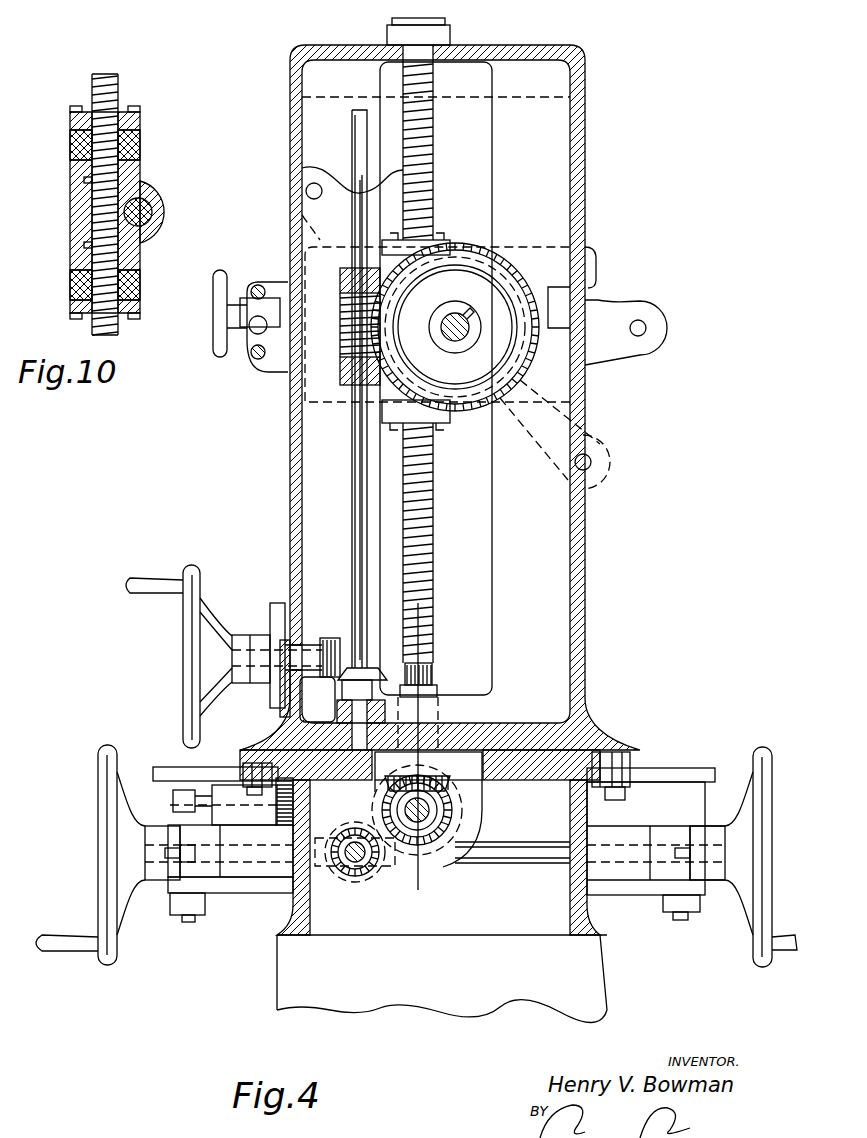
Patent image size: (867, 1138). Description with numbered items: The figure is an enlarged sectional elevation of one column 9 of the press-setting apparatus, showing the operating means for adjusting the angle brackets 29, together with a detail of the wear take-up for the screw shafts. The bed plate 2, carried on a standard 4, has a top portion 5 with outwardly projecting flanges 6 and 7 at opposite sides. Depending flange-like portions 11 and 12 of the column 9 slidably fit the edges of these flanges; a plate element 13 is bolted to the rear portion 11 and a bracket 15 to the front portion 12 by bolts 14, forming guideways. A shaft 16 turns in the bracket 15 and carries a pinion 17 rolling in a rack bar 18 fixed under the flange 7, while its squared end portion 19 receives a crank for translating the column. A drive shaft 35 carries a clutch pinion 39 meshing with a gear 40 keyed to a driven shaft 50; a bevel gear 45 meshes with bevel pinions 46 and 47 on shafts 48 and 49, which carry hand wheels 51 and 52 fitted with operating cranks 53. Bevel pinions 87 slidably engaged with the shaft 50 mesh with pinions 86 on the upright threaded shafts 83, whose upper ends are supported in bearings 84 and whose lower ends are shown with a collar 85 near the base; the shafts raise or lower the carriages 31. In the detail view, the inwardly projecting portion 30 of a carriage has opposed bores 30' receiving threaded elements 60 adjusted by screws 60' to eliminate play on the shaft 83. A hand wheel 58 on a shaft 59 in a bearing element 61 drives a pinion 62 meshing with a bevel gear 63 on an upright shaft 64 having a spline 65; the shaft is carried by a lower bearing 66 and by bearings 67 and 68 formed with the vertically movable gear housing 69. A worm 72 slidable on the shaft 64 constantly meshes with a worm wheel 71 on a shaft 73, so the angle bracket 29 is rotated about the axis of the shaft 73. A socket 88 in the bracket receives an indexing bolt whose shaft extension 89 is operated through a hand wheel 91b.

In FIG. 4, the bed plate 2 is at (568, 918).
In FIG. 4, the standard 4 is at (283, 997).
In FIG. 4, the top portion 5 is at (505, 758).
In FIG. 4, the flange 6 is at (628, 764).
In FIG. 4, the flange 7 is at (418, 603).
In FIG. 4, the column 9 is at (590, 557).
In FIG. 4, the rear flange-like portion 11 is at (630, 763).
In FIG. 4, the front flange-like portion 12 is at (242, 767).
In FIG. 4, the plate element 13 is at (628, 785).
In FIG. 4, the bolt 14 is at (255, 790).
In FIG. 4, the bracket 15 is at (232, 770).
In FIG. 4, the shaft 16 is at (227, 812).
In FIG. 4, the pinion 17 is at (287, 822).
In FIG. 4, the rack bar 18 is at (300, 772).
In FIG. 4, the projecting end portion 19 is at (183, 798).
In FIG. 4, the angle bracket 29 is at (668, 340).
In FIG. 10, the inwardly projecting portion 30 is at (142, 202).
In FIG. 4, the inwardly projecting portion 30 is at (455, 294).
In FIG. 10, the bore 30' is at (57, 221).
In FIG. 4, the carriage 31 is at (286, 148).
In FIG. 4, the drive shaft 35 is at (357, 862).
In FIG. 4, the clutch pinion 39 is at (362, 868).
In FIG. 4, the gear 40 is at (465, 812).
In FIG. 4, the bevel gear 45 is at (350, 870).
In FIG. 4, the bevel pinion 46 is at (328, 867).
In FIG. 4, the bevel pinion 47 is at (390, 867).
In FIG. 4, the shaft 48 is at (243, 870).
In FIG. 4, the shaft 49 is at (552, 867).
In FIG. 4, the driven shaft 50 is at (425, 813).
In FIG. 4, the hand wheel 51 is at (97, 772).
In FIG. 4, the hand wheel 52 is at (765, 750).
In FIG. 4, the operating crank 53 is at (43, 943).
In FIG. 4, the hand wheel 58 is at (186, 677).
In FIG. 4, the shaft 59 is at (292, 656).
In FIG. 10, the threaded element 60 is at (134, 215).
In FIG. 10, the bolt or screw 60' is at (107, 208).
In FIG. 4, the bolt or screw 60' is at (430, 320).
In FIG. 4, the bearing element 61 is at (265, 637).
In FIG. 4, the pinion 62 is at (329, 640).
In FIG. 4, the bevel gear 63 is at (338, 690).
In FIG. 4, the upright shaft 64 is at (352, 546).
In FIG. 4, the spline 65 is at (356, 500).
In FIG. 4, the bearing 66 is at (372, 713).
In FIG. 4, the bearing 67 is at (342, 375).
In FIG. 4, the bearing 68 is at (343, 267).
In FIG. 4, the gear housing 69 is at (500, 246).
In FIG. 4, the worm wheel 71 is at (527, 262).
In FIG. 4, the worm 72 is at (340, 335).
In FIG. 10, the shaft 73 is at (150, 212).
In FIG. 4, the shaft 73 is at (457, 337).
In FIG. 10, the upright threaded shaft 83 is at (120, 83).
In FIG. 4, the upright threaded shaft 83 is at (425, 540).
In FIG. 4, the bearing 84 is at (438, 33).
In FIG. 4, the flange 85 is at (440, 692).
In FIG. 4, the bevel pinion 86 is at (443, 780).
In FIG. 4, the bevel pinion 87 is at (427, 815).
In FIG. 4, the socket 88 is at (645, 325).
In FIG. 4, the shaft extension 89 is at (256, 332).
In FIG. 4, the hand wheel 91b is at (215, 340).